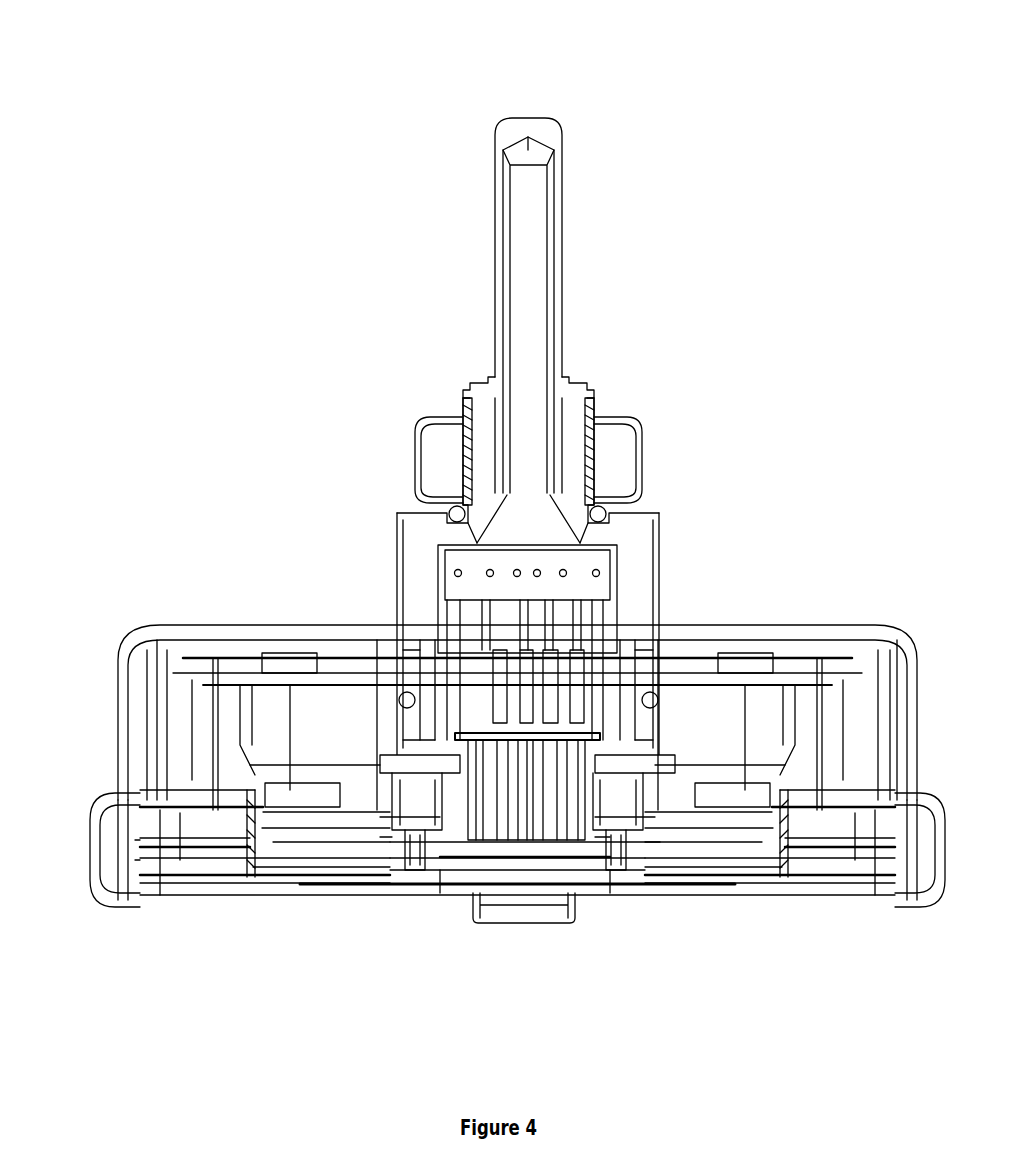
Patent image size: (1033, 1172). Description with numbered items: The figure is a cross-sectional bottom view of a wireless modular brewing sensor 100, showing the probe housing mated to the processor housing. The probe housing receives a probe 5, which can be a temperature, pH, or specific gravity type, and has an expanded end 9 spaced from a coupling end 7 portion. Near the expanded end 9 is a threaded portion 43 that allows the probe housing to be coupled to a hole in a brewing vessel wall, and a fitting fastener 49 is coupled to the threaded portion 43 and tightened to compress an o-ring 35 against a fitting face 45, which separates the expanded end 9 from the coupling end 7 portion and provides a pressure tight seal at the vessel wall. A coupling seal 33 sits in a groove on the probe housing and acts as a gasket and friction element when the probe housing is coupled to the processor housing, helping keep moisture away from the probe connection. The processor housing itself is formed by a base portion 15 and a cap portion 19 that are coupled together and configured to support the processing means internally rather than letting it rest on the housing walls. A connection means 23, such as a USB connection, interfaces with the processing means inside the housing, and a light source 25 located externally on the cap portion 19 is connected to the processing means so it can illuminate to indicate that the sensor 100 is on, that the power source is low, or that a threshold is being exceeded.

The wireless modular brewing sensor 100 is at (178, 113).
The expanded end 9 is at (495, 180).
The probe 5 is at (537, 193).
The threaded portion 43 is at (590, 397).
The fitting fastener 49 is at (640, 433).
The o-ring 35 is at (603, 513).
The fitting face 45 is at (415, 512).
The coupling end 7 is at (658, 561).
The connection means 23 is at (512, 740).
The coupling seal 33 is at (650, 700).
The base portion 15 is at (170, 630).
The cap portion 19 is at (130, 903).
The light source 25 is at (560, 910).